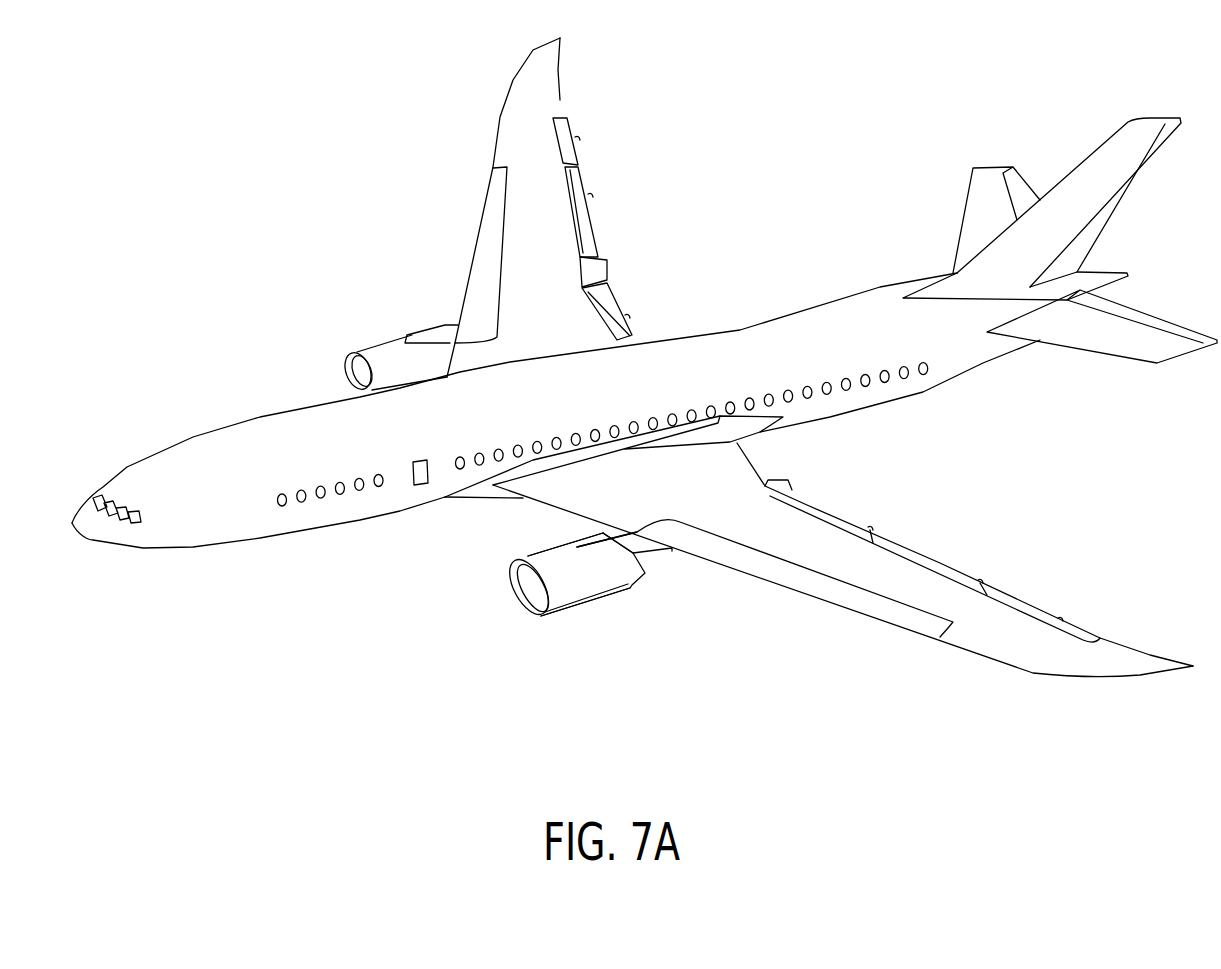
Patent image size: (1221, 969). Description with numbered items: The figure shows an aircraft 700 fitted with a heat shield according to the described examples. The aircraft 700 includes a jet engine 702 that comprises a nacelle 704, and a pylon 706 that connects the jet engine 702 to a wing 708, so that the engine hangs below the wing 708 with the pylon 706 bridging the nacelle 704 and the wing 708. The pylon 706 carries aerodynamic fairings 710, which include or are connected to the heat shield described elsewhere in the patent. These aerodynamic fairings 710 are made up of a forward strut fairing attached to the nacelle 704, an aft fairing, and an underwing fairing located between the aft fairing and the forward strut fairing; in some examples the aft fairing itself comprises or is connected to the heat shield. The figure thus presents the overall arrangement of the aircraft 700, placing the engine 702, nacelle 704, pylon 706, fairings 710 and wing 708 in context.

The aircraft 700 is at (644, 293).
The jet engine 702 is at (555, 647).
The nacelle 704 is at (605, 613).
The pylon 706 is at (672, 550).
The wing 708 is at (935, 683).
The aerodynamic fairings 710 is at (650, 585).